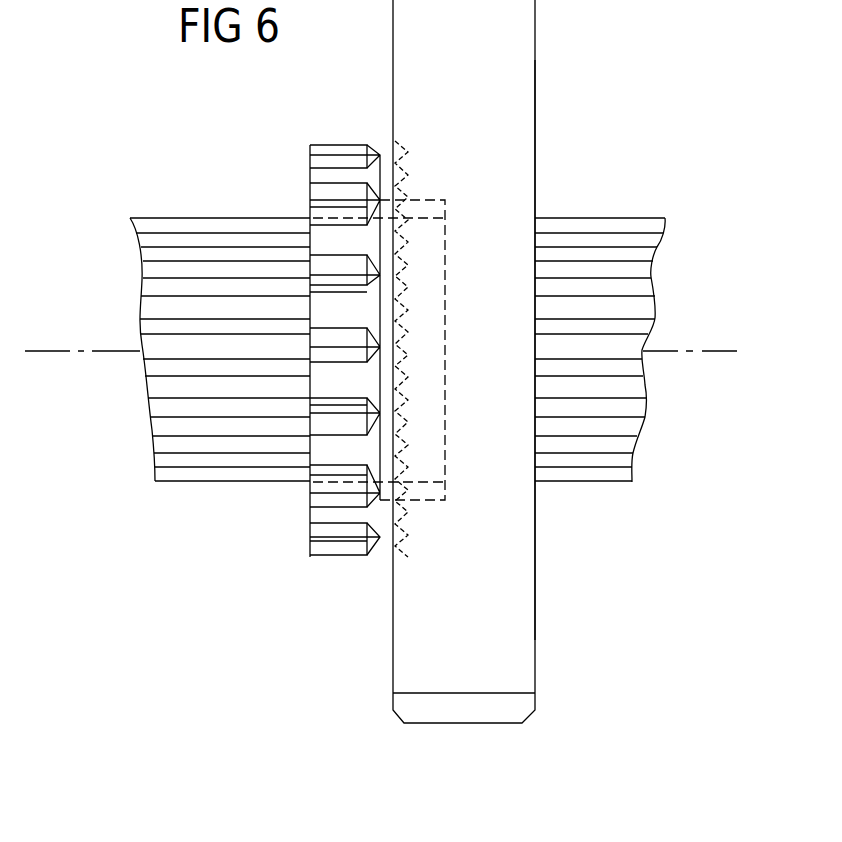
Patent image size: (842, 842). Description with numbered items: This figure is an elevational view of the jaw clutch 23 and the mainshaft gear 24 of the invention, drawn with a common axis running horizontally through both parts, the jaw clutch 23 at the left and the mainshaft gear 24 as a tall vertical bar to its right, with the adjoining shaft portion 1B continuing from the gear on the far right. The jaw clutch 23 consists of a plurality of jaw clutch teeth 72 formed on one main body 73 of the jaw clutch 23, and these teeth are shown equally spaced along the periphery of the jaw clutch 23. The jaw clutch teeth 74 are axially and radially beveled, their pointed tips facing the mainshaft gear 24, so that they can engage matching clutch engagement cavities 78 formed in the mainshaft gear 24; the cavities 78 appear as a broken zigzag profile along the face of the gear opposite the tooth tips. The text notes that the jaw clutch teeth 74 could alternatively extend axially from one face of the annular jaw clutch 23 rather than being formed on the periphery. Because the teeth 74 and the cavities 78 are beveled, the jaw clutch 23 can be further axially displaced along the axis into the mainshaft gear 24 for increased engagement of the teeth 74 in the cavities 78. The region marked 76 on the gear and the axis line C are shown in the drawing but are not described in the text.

The mainshaft gear 24 is at (518, 28).
The bar surface 76 is at (520, 178).
The clutch engagement cavities 78 is at (391, 200).
The jaw clutch 23 is at (318, 176).
The jaw clutch teeth 72 is at (320, 190).
The jaw clutch teeth 74 is at (373, 200).
The main body 73 is at (325, 445).
The shaft 1B is at (641, 228).
The center line C is at (705, 350).